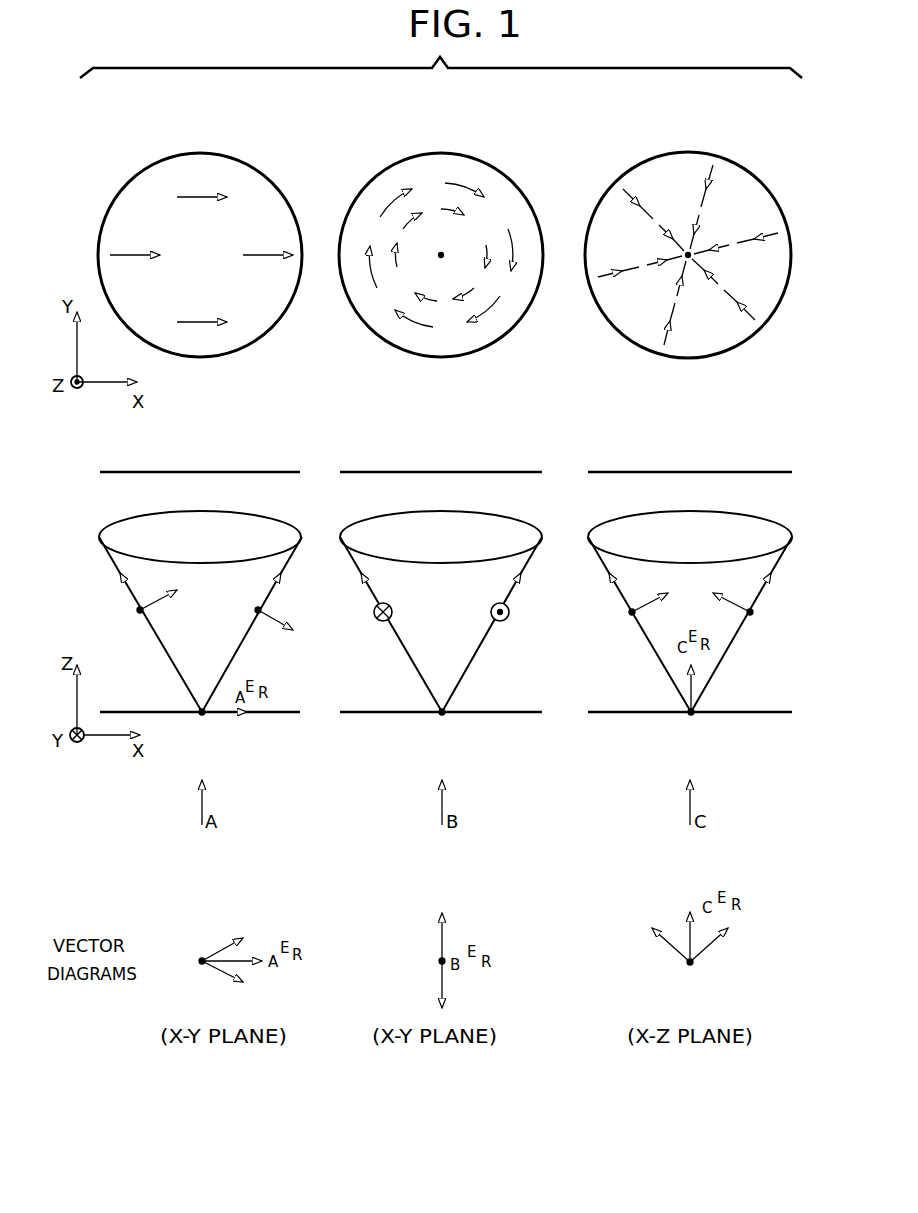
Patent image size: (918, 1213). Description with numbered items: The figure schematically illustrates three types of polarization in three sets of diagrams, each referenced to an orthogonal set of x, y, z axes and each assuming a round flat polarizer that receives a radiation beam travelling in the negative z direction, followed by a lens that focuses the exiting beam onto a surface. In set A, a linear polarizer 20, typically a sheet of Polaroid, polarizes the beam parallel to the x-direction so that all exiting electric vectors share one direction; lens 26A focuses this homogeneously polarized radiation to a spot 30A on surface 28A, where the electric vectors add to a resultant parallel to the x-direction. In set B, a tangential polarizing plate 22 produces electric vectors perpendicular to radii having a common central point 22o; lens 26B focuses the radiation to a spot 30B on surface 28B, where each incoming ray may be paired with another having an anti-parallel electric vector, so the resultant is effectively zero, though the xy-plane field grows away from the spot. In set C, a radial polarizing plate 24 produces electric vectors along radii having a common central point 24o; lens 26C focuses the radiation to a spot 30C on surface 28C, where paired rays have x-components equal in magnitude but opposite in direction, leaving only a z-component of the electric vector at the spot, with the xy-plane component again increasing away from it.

The linear polarizer 20 is at (236, 161).
The tangential polarizing plate 22 is at (477, 160).
The radial polarizing plate 24 is at (725, 160).
The central point 22o is at (441, 255).
The central point 24o is at (690, 256).
The lens 26A is at (226, 517).
The lens 26B is at (466, 517).
The lens 26C is at (714, 517).
The surface 28A is at (295, 712).
The surface 28B is at (510, 712).
The surface 28C is at (760, 712).
The spot 30A is at (202, 714).
The spot 30B is at (442, 714).
The spot 30C is at (691, 714).